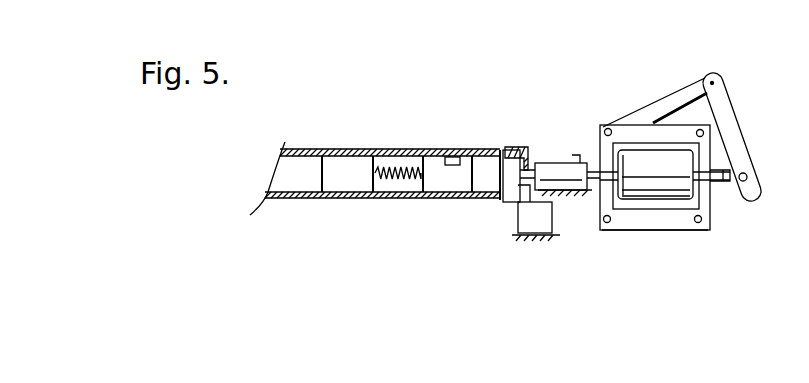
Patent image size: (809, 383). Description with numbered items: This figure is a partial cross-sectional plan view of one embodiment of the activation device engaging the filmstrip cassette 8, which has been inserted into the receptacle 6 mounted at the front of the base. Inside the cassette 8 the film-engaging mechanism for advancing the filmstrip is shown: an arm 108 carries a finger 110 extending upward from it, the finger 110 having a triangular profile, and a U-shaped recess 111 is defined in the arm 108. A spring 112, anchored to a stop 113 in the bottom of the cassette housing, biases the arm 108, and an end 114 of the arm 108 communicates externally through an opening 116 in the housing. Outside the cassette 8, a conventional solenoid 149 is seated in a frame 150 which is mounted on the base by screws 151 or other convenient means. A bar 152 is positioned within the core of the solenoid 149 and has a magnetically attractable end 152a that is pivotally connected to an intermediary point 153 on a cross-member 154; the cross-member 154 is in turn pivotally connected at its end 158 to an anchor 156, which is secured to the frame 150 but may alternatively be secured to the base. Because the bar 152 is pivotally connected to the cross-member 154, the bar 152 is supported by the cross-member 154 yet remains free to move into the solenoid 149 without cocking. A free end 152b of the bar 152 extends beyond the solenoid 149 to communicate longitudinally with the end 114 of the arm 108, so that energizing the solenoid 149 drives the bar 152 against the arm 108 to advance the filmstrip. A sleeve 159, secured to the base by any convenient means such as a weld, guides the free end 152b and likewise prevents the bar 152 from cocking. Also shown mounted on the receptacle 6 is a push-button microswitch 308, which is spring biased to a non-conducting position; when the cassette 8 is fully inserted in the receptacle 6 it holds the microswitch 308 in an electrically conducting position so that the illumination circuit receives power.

The filmstrip cassette 8 is at (415, 198).
The stop 113 is at (353, 177).
The spring 112 is at (392, 167).
The arm 108 is at (442, 172).
The finger 110 is at (457, 165).
The U-shaped recess 111 is at (487, 172).
The end of the arm 114 is at (507, 190).
The receptacle 6 is at (517, 145).
The opening 116 is at (530, 163).
The free end of the bar 152b is at (530, 172).
The push-button microswitch 308 is at (543, 220).
The sleeve 159 is at (580, 195).
The frame 150 is at (602, 127).
The solenoid 149 is at (645, 162).
The bar 152 is at (693, 178).
The magnetically attractable end 152a is at (727, 181).
The screws 151 is at (652, 232).
The anchor 156 is at (663, 114).
The cross-member 154 is at (725, 112).
The end of the cross-member 158 is at (708, 79).
The intermediary point 153 is at (748, 175).